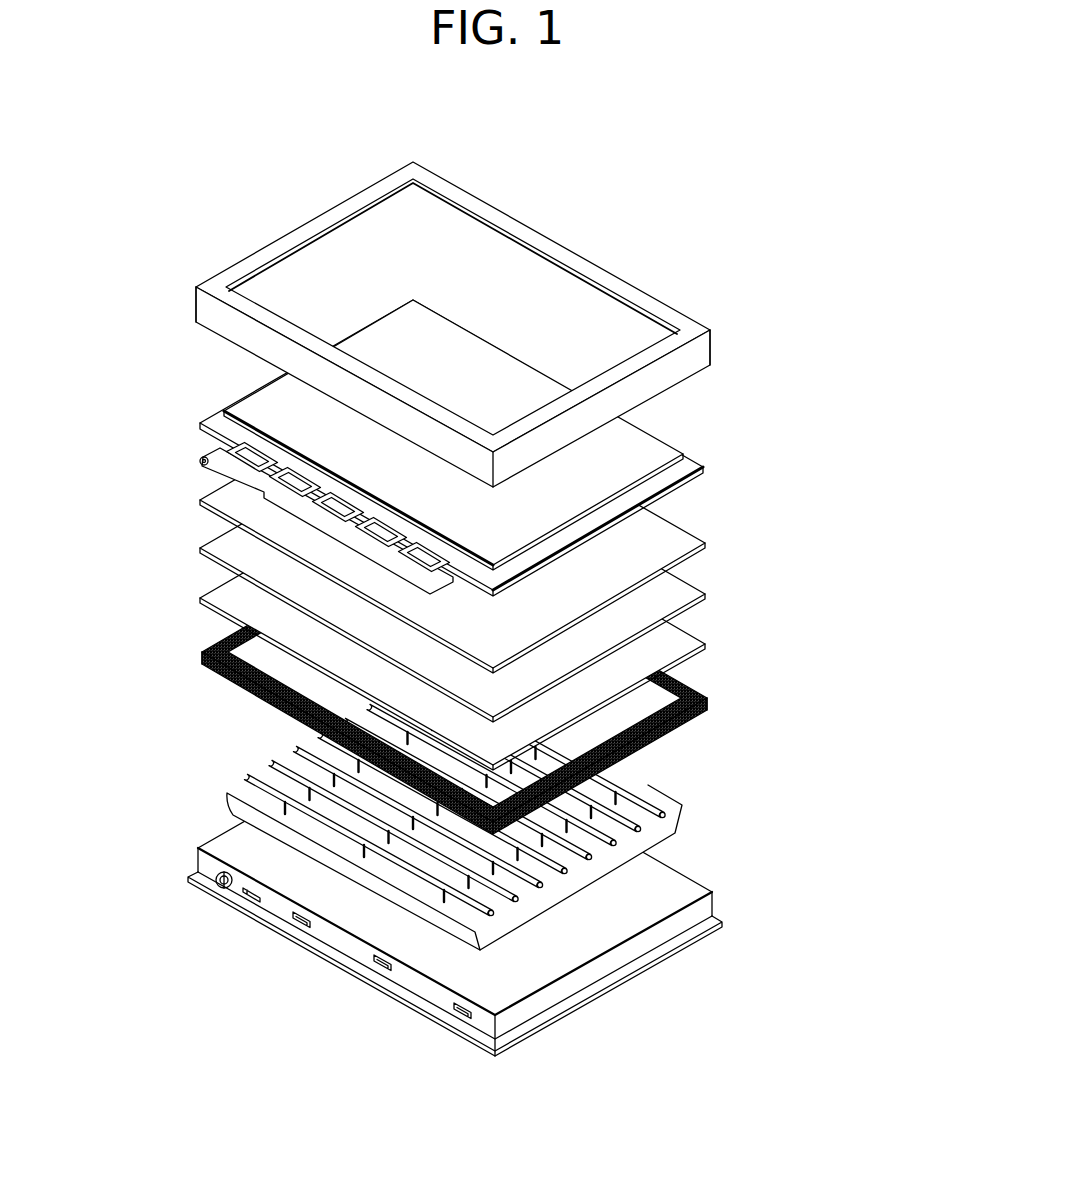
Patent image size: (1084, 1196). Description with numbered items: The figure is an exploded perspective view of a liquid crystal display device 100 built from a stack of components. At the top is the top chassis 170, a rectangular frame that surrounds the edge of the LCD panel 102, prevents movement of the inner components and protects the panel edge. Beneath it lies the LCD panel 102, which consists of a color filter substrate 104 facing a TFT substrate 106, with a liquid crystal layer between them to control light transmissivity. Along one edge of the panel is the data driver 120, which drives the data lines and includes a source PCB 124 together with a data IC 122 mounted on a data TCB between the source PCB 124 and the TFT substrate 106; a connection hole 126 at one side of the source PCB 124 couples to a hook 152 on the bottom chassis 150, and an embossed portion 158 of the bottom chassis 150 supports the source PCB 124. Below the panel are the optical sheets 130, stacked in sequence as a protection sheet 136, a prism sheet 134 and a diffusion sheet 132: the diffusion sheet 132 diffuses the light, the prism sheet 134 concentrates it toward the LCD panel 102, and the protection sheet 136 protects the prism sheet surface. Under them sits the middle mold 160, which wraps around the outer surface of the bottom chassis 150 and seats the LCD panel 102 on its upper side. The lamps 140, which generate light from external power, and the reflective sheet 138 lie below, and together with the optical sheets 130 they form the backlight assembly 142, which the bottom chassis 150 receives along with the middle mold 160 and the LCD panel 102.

The LCD device 100 is at (103, 111).
The LCD panel 102 is at (470, 448).
The color filter substrate 104 is at (650, 445).
The TFT substrate 106 is at (680, 468).
The data driver 120 is at (247, 496).
The data IC 122 is at (221, 447).
The source PCB 124 is at (226, 453).
The connection hole 126 is at (201, 465).
The optical sheets 130 is at (553, 573).
The diffusion sheet 132 is at (680, 638).
The prism sheet 134 is at (677, 593).
The protection sheet 136 is at (673, 546).
The reflective sheet 138 is at (682, 803).
The lamps 140 is at (666, 814).
The backlight assembly 142 is at (529, 663).
The bottom chassis 150 is at (410, 889).
The hook 152 is at (217, 884).
The embossed portion 158 is at (293, 925).
The middle mold 160 is at (201, 657).
The top chassis 170 is at (712, 335).